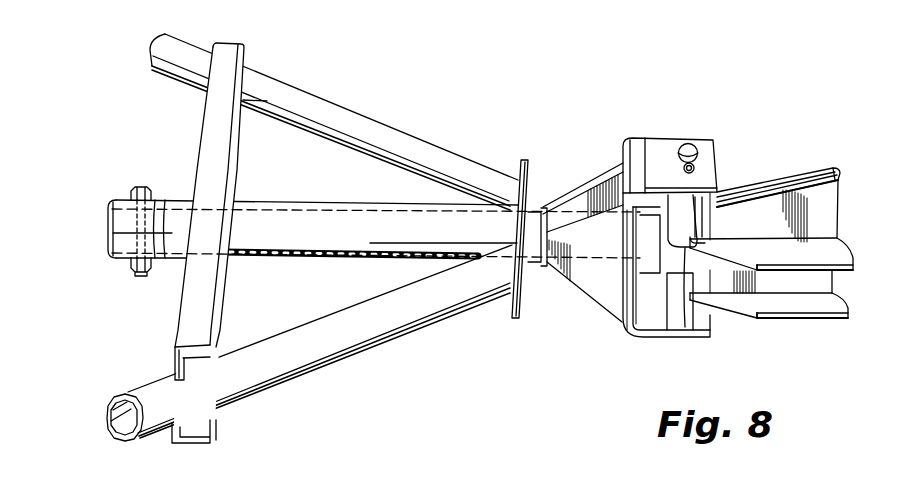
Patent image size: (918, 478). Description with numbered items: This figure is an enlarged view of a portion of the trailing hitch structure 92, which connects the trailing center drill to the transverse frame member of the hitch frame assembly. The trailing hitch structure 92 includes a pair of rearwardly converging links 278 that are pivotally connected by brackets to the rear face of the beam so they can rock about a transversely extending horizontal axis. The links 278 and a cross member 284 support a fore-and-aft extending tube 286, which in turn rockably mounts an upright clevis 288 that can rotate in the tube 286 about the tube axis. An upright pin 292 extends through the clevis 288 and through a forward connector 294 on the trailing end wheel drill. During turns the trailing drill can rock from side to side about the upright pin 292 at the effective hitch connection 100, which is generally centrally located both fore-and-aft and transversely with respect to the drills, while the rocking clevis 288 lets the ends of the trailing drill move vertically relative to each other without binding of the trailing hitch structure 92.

The effective hitch connection 100 is at (737, 177).
The trailing hitch structure 92 is at (528, 355).
The rearwardly converging links 278 is at (400, 138).
The cross member 284 is at (205, 302).
The fore-and-aft extending tube 286 is at (336, 168).
The upright clevis 288 is at (643, 137).
The upright pin 292 is at (700, 138).
The forward connector 294 is at (782, 176).